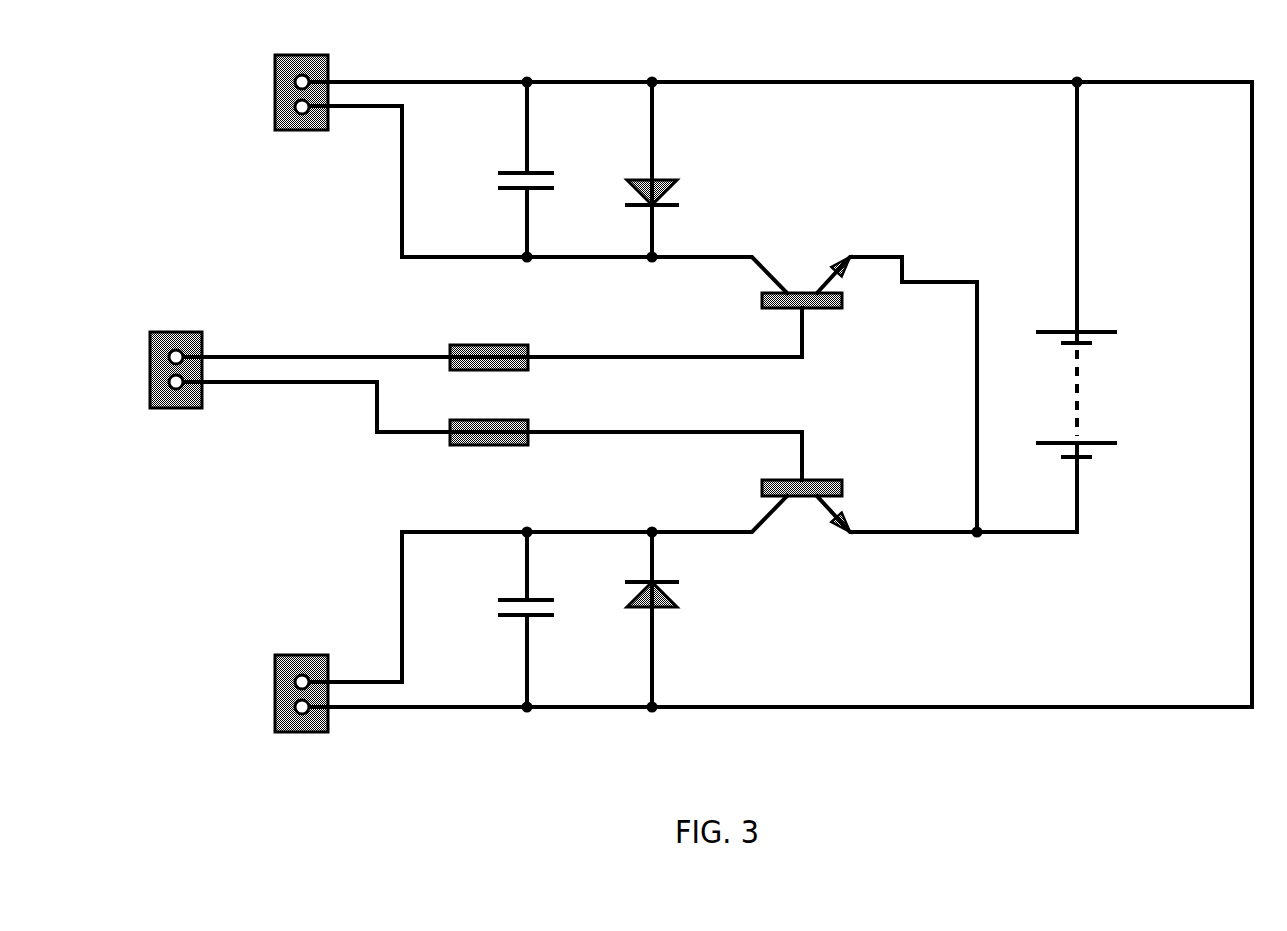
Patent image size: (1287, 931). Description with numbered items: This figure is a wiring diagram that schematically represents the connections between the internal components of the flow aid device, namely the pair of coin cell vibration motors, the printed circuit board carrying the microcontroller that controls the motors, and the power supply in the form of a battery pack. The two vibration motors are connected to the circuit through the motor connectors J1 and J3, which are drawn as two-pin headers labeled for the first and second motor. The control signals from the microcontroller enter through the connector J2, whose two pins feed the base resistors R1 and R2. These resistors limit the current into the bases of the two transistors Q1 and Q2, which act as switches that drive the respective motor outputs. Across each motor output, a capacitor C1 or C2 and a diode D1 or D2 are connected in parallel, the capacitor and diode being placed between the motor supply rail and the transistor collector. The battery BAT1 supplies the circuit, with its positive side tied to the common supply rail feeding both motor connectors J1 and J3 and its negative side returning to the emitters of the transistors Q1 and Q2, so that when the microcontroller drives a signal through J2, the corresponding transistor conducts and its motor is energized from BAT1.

The connector J1 (Motor 1) J1 is at (318, 90).
The connector J2 (From Microcontroller) J2 is at (243, 366).
The connector J3 (Motor 2) J3 is at (318, 691).
The capacitor C1 0u1 C1 is at (551, 186).
The capacitor C2 0u1 C2 is at (551, 611).
The diode D1 1N4001 D1 is at (697, 210).
The diode D2 1N4001 D2 is at (697, 610).
The resistor R1 330 R1 is at (488, 353).
The resistor R2 330 R2 is at (488, 427).
The transistor Q1 2N2222 Q1 is at (856, 304).
The transistor Q2 2N2222 Q2 is at (800, 537).
The battery BAT1 3.7V BAT1 is at (1118, 394).